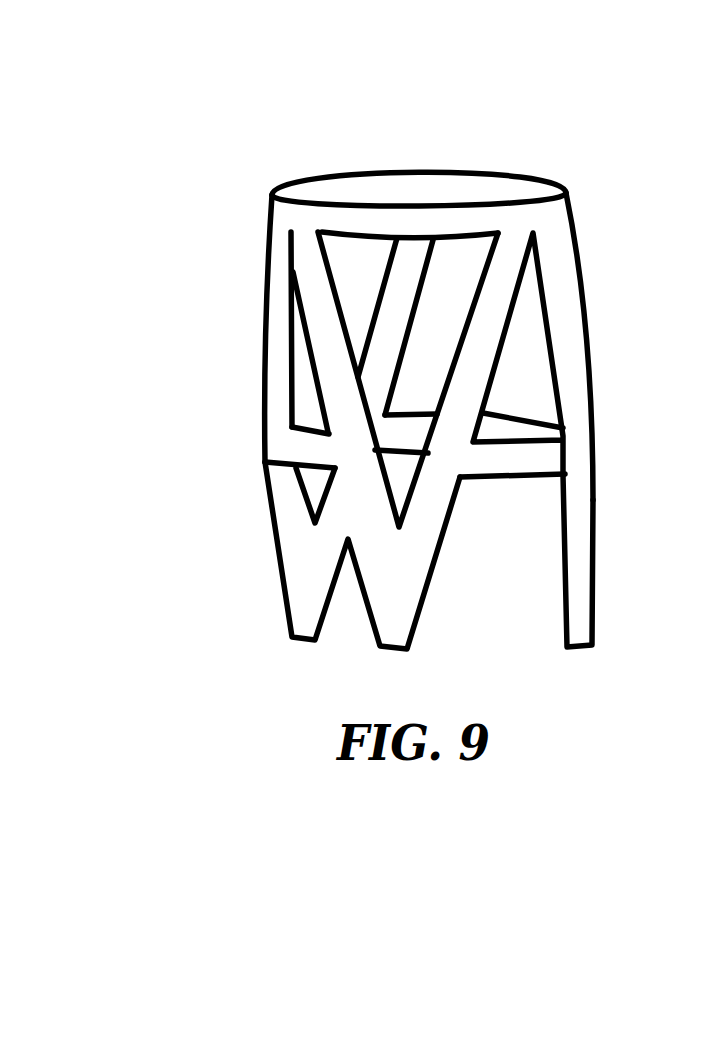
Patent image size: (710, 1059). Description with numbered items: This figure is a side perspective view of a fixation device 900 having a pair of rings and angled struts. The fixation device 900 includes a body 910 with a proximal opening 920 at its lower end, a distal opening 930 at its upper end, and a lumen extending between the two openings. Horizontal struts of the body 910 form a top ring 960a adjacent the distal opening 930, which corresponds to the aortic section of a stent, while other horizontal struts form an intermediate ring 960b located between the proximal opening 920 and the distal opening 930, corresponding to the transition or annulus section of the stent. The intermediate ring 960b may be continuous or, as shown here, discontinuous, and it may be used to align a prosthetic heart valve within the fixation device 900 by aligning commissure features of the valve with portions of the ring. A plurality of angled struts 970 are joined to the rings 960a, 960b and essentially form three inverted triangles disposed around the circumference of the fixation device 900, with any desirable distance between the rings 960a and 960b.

The fixation device 900 is at (248, 432).
The body 910 is at (588, 431).
The proximal opening 920 is at (538, 640).
The distal opening 930 is at (495, 161).
The top ring 960a is at (305, 213).
The intermediate ring 960b is at (508, 458).
The angled struts 970 is at (272, 355).